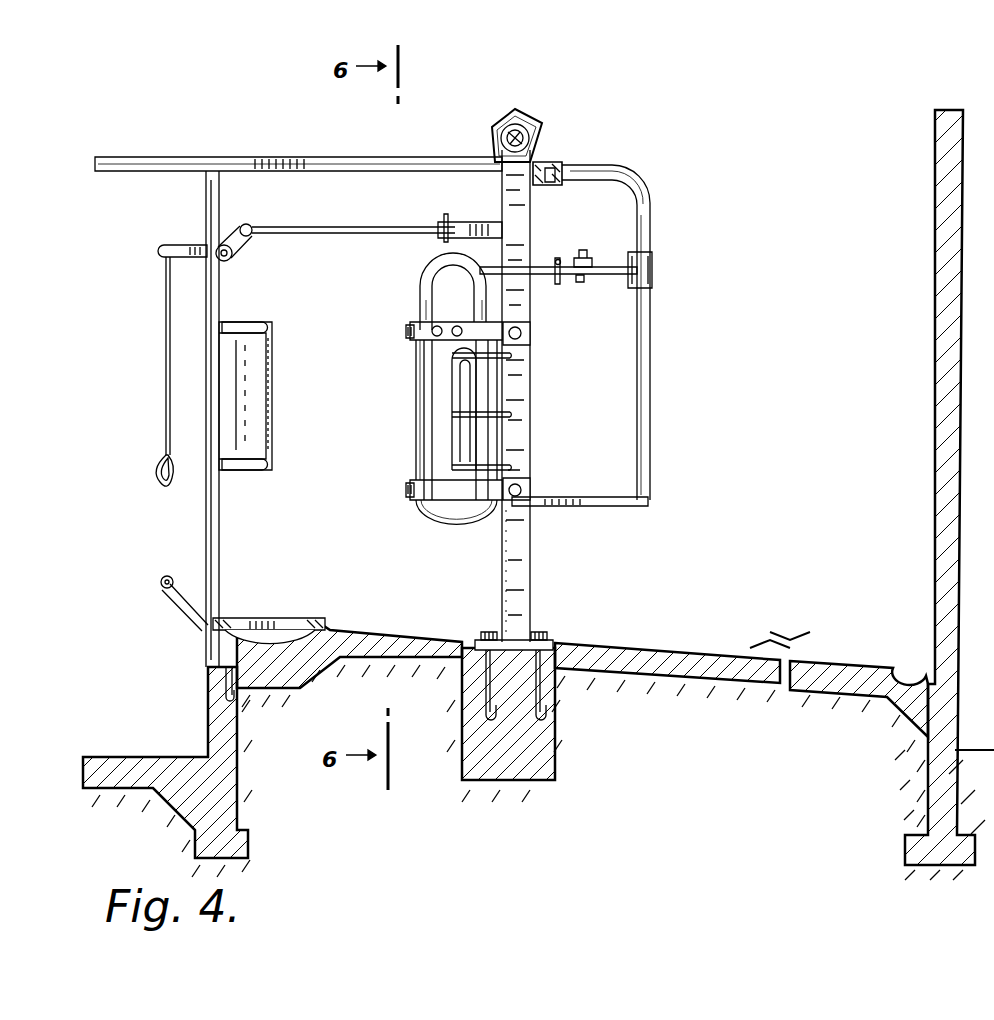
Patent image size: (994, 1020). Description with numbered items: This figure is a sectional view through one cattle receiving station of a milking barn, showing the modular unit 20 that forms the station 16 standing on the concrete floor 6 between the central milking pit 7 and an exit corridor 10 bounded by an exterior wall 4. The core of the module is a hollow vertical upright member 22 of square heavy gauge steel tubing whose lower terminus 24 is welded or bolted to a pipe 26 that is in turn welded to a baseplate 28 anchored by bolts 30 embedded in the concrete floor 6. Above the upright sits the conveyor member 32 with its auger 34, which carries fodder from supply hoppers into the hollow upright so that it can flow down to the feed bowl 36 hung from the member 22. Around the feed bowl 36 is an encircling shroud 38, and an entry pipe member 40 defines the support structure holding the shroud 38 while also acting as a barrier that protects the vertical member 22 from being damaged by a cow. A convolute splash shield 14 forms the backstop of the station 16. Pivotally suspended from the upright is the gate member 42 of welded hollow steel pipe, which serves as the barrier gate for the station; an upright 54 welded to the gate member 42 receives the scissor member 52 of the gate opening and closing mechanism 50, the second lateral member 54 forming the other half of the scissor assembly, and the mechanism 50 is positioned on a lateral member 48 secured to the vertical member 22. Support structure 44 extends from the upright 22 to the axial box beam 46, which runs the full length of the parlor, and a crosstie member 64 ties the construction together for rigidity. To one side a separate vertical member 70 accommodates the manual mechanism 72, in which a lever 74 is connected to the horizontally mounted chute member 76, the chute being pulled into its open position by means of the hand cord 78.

The exterior wall 4 is at (935, 350).
The concrete floor 6 is at (708, 660).
The central milking pit 7 is at (120, 562).
The exit corridor 10 is at (790, 344).
The convolute splash shield 14 is at (273, 358).
The cattle receiving station 16 is at (348, 449).
The modular unit 20 is at (596, 339).
The hollow vertical upright member 22 is at (531, 315).
The terminus 24 is at (531, 482).
The pipe 26 is at (531, 572).
The baseplate 28 is at (478, 640).
The bolt 30 is at (555, 645).
The conveyor member 32 is at (492, 130).
The auger 34 is at (522, 125).
The feed bowl 36 is at (450, 520).
The encircling shroud 38 is at (424, 443).
The entry pipe member 40 is at (420, 283).
The gate member 42 is at (462, 390).
The support structure 44 is at (651, 220).
The axial box beam 46 is at (550, 162).
The lateral member 48 is at (592, 508).
The gate opening and closing mechanism 50 is at (580, 249).
The lateral member of scissor assembly 52 is at (632, 252).
The upright 54 is at (596, 275).
The crosstie member 64 is at (318, 165).
The vertical member 70 is at (219, 545).
The manual mechanism 72 is at (192, 240).
The lever 74 is at (232, 258).
The chute member 76 is at (492, 222).
The hand cord 78 is at (162, 458).